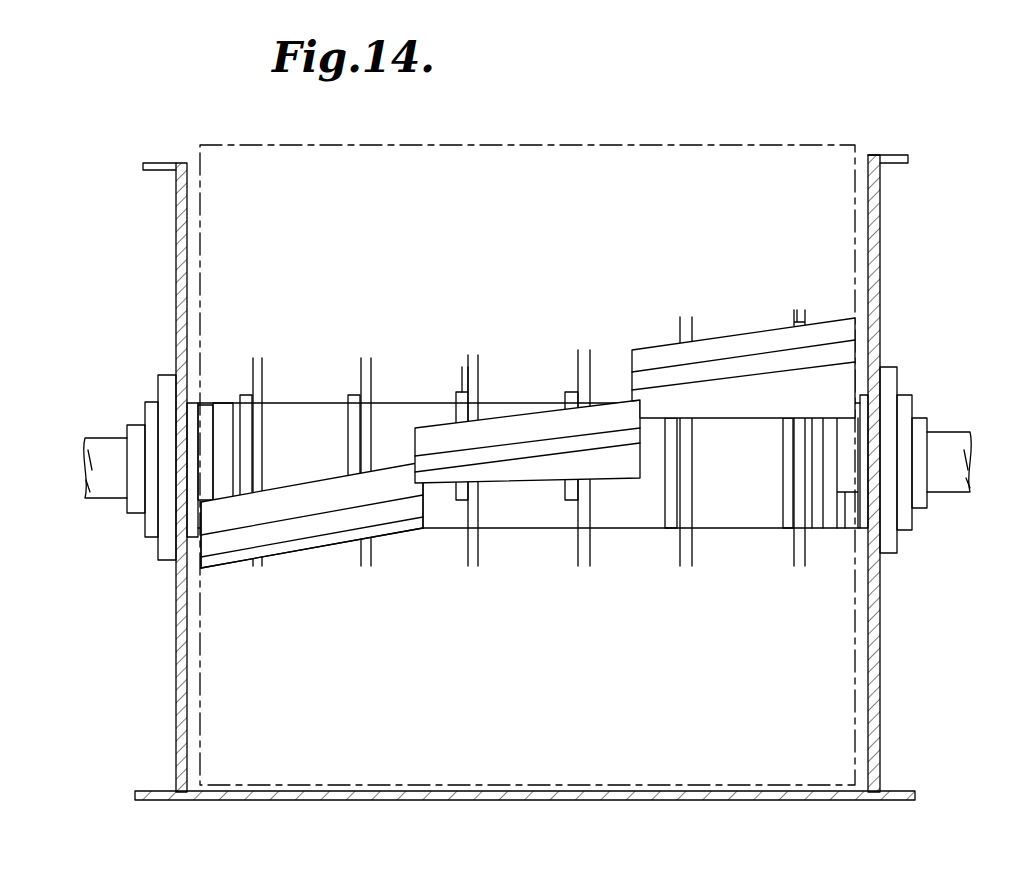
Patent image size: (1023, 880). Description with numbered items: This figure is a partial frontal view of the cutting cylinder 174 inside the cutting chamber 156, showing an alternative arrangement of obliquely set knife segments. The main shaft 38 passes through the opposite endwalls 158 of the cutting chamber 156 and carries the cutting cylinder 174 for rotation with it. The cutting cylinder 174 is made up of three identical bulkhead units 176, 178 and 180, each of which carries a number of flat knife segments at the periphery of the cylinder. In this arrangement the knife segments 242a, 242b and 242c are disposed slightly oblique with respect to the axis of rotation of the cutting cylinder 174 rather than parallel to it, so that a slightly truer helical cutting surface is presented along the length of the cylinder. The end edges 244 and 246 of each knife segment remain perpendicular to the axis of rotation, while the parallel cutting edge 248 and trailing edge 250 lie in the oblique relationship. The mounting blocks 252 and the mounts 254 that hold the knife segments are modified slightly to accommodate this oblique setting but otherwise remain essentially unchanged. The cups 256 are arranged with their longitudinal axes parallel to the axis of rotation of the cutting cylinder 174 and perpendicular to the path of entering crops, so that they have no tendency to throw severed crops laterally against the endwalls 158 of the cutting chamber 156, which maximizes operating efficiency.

The main shaft 38 is at (945, 435).
The cutting chamber 156 is at (882, 620).
The endwalls 158 is at (178, 300).
The cutting cylinder 174 is at (545, 132).
The bulkhead unit 176 is at (797, 296).
The bulkhead unit 178 is at (549, 344).
The bulkhead unit 180 is at (337, 346).
The knife segment 242a is at (288, 534).
The knife segment 242b is at (517, 469).
The knife segment 242c is at (754, 383).
The end edge 244 is at (196, 570).
The end edge 246 is at (425, 510).
The cutting edge 248 is at (237, 562).
The trailing edge 250 is at (255, 525).
The mounting block 252 is at (728, 345).
The mount 254 is at (386, 428).
The cup 256 is at (723, 422).